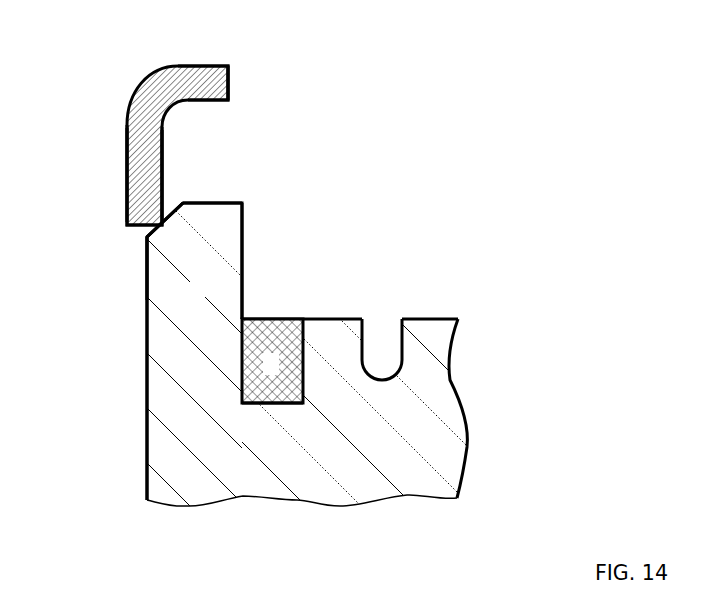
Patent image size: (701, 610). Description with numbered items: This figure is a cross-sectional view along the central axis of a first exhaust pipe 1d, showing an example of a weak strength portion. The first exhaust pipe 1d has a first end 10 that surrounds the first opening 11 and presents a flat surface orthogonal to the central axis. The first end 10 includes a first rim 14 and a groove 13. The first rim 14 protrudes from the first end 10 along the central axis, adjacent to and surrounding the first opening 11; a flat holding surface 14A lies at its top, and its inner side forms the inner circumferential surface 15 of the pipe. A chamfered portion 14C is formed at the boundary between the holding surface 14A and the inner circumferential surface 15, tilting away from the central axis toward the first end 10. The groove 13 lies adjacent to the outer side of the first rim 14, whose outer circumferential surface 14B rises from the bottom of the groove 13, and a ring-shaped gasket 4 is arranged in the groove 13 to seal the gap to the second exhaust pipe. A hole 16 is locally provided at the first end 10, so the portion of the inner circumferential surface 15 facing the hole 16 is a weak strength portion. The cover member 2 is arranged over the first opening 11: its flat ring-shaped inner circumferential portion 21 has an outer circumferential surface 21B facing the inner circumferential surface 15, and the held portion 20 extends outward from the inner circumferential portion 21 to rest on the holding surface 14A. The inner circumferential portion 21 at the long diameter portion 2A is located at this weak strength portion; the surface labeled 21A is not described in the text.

The first exhaust pipe 1d is at (495, 412).
The cover member 2 is at (101, 82).
The long diameter portion 2A is at (251, 80).
The gasket 4 is at (278, 377).
The first end 10 is at (331, 319).
The first opening 11 is at (42, 278).
The groove 13 is at (282, 405).
The first rim 14 is at (203, 307).
The holding surface 14A is at (222, 203).
The outer circumferential surface 14B is at (242, 232).
The chamfered portion 14C is at (146, 236).
The inner circumferential surface 15 is at (146, 393).
The hole 16 is at (392, 338).
The held portion 20 is at (203, 73).
The inner circumferential portion 21 is at (135, 147).
The outer surface of lip portion 21A is at (126, 178).
The outer circumferential surface 21B is at (162, 160).